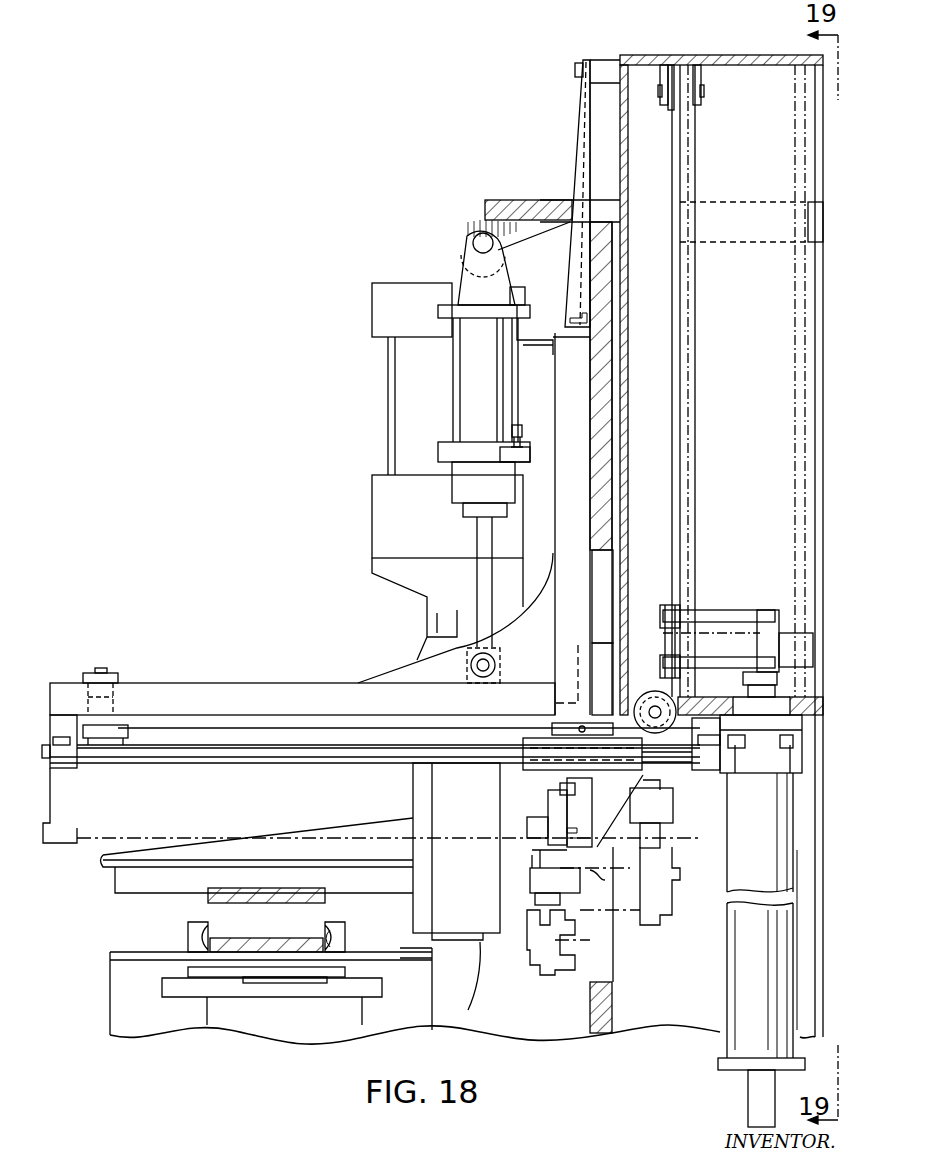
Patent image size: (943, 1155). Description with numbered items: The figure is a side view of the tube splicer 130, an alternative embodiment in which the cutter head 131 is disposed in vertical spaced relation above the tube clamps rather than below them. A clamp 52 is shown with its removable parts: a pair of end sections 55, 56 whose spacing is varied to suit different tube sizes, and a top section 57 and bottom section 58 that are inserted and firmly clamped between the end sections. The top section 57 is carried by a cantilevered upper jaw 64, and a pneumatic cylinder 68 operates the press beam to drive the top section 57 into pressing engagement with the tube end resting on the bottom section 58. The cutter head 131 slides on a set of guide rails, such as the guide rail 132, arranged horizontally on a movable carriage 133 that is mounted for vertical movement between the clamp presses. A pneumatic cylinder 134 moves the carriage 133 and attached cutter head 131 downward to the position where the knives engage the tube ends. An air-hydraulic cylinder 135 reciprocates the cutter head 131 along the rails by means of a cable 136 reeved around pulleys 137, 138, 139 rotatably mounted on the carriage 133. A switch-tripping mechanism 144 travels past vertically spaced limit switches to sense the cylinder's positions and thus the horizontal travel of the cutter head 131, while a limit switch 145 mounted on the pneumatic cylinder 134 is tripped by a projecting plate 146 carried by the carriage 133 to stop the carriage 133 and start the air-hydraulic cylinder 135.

The clamp 52 is at (343, 925).
The end section 55 is at (340, 940).
The end section 56 is at (188, 932).
The top section 57 is at (280, 897).
The bottom section 58 is at (268, 940).
The upper jaw 64 is at (143, 880).
The pneumatic cylinder 68 is at (372, 318).
The tube splicer 130 is at (360, 470).
The cutter head 131 is at (590, 882).
The guide rail 132 is at (258, 763).
The carriage 133 is at (228, 682).
The pneumatic cylinder 134 is at (455, 385).
The air-hydraulic cylinder 135 is at (797, 953).
The cable 136 is at (678, 288).
The pulley 137 is at (122, 722).
The pulley 138 is at (653, 691).
The pulley 139 is at (678, 108).
The switch-tripping mechanism 144 is at (773, 610).
The limit switch 145 is at (540, 408).
The projecting plate 146 is at (538, 335).